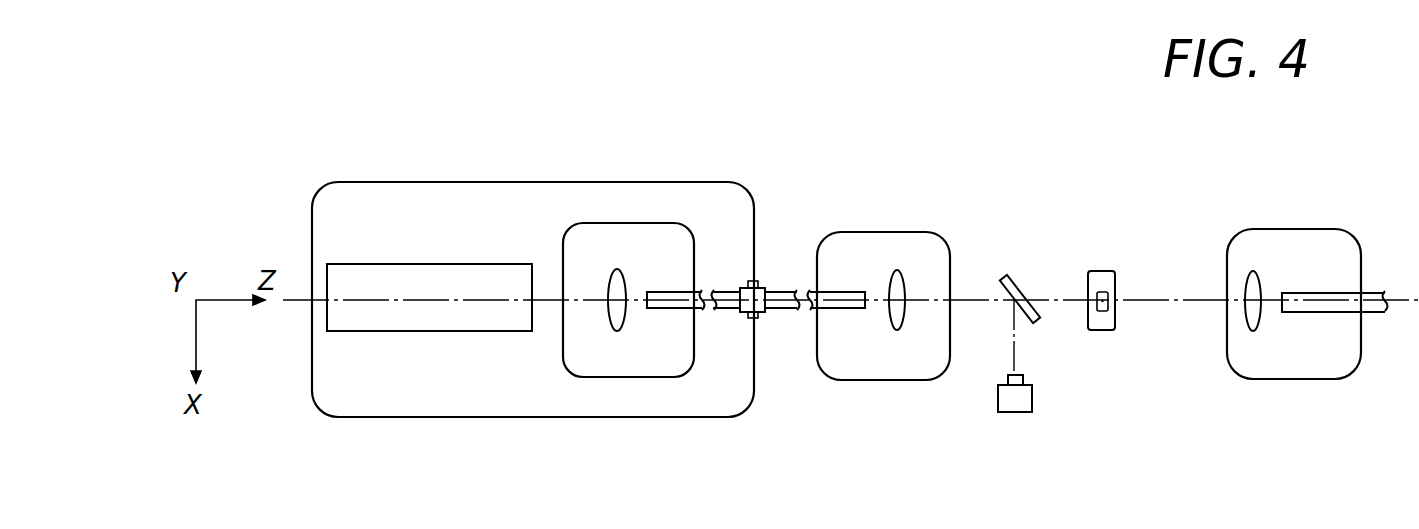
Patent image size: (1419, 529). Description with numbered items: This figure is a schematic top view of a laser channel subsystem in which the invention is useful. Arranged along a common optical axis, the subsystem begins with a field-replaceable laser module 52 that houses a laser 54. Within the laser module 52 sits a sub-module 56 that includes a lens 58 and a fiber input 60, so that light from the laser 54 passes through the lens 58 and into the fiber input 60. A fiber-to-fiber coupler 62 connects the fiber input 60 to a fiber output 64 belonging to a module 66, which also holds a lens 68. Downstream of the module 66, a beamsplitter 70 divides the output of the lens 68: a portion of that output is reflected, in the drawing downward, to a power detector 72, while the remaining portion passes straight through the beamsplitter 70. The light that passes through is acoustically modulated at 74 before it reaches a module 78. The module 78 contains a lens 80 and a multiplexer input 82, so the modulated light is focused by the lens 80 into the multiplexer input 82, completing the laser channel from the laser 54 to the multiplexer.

The laser module 52 is at (362, 182).
The laser 54 is at (478, 331).
The sub-module 56 is at (563, 250).
The lens 58 is at (617, 270).
The fiber input 60 is at (672, 292).
The fiber-to-fiber coupler 62 is at (765, 288).
The fiber output 64 is at (783, 312).
The module 66 is at (890, 365).
The lens 68 is at (890, 272).
The beamsplitter 70 is at (1012, 280).
The power detector 72 is at (1022, 393).
The acoustic modulator 74 is at (1100, 280).
The module 78 is at (1307, 365).
The lens 80 is at (1240, 278).
The multiplexer input 82 is at (1326, 296).